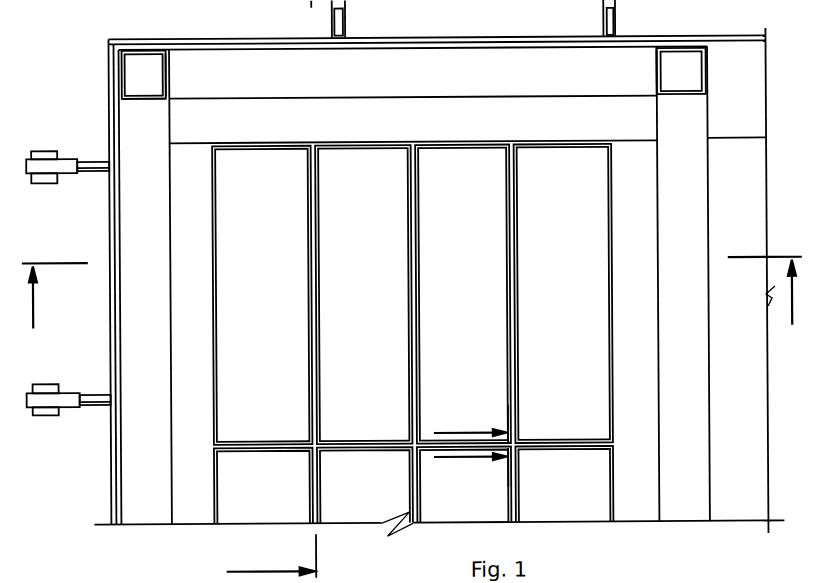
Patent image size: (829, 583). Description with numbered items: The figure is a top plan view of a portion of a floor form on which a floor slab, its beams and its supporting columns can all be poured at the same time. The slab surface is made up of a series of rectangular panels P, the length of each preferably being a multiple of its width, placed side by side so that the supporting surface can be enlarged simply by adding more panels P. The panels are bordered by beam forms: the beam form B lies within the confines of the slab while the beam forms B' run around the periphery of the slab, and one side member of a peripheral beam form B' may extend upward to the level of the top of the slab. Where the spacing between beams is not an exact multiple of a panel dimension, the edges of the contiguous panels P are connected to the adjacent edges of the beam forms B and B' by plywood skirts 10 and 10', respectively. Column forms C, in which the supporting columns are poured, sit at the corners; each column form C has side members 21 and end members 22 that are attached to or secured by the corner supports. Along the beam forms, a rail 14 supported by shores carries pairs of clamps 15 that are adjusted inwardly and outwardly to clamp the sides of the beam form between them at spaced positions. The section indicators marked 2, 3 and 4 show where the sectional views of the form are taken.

The skirt 10 is at (417, 308).
The skirt 10' is at (413, 124).
The rail 14 is at (68, 170).
The clamp 15 is at (96, 162).
The side member 21 is at (168, 71).
The end member 22 is at (145, 98).
The beam form B is at (683, 283).
The beam form B' is at (389, 286).
The column form C is at (148, 78).
The panel P is at (265, 325).
The section line 2- 2 is at (412, 293).
The section line 3- 3 is at (271, 556).
The section line 4- 4 is at (471, 446).